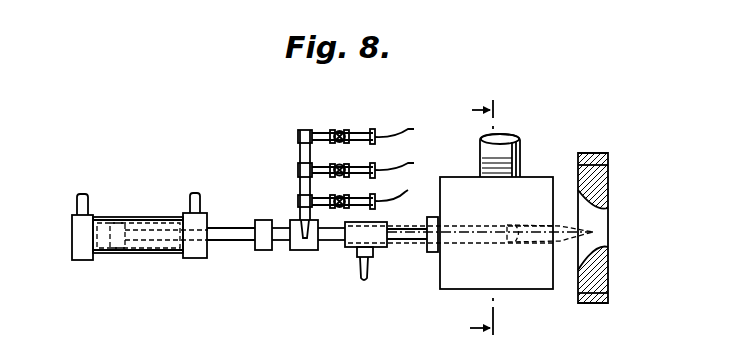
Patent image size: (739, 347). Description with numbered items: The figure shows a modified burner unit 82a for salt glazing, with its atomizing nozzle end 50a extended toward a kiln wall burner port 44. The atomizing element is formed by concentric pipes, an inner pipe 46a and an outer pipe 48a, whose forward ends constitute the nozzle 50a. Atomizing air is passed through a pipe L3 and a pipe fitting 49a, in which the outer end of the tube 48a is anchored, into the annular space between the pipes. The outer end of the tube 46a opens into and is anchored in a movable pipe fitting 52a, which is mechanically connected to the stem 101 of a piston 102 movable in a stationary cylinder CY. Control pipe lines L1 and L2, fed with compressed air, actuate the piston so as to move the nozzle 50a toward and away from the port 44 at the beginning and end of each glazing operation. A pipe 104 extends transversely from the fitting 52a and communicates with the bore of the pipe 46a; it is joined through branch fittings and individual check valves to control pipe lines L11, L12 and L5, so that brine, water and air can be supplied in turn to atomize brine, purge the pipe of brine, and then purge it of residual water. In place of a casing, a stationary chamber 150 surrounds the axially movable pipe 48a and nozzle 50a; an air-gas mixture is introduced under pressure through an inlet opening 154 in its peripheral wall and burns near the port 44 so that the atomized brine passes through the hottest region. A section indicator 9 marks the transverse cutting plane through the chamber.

The stationary cylinder CY is at (140, 217).
The control pipe line L1 is at (87, 204).
The control pipe line L2 is at (199, 205).
The piston 102 is at (112, 227).
The piston stem 101 is at (233, 242).
The movable pipe fitting 52a is at (303, 249).
The pipe 104 is at (300, 210).
The control pipe line L5 is at (357, 132).
The control pipe line L12 is at (358, 167).
The control pipe line L11 is at (357, 197).
The inner pipe 46a is at (333, 238).
The pipe fitting 49a is at (380, 248).
The atomizing air pipe L3 is at (365, 280).
The outer pipe 48a is at (415, 243).
The burner unit 82a is at (407, 221).
The stationary chamber 150 is at (537, 200).
The atomizing nozzle end 50a is at (597, 215).
The inlet opening 154 is at (520, 148).
The section line 9- 9 is at (489, 219).
The kiln wall burner port 44 is at (580, 185).